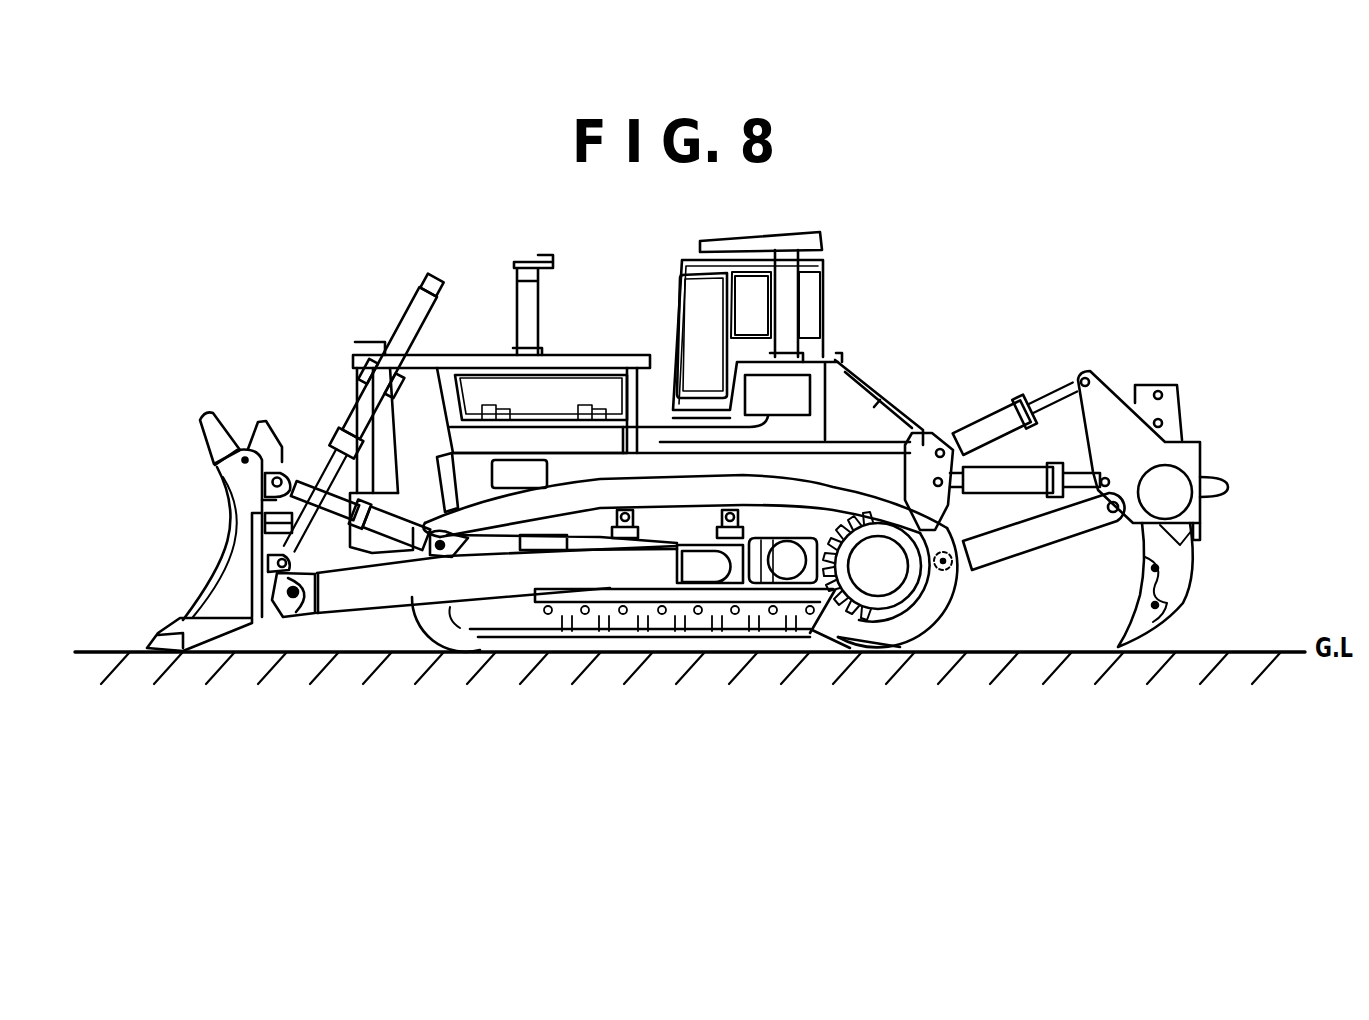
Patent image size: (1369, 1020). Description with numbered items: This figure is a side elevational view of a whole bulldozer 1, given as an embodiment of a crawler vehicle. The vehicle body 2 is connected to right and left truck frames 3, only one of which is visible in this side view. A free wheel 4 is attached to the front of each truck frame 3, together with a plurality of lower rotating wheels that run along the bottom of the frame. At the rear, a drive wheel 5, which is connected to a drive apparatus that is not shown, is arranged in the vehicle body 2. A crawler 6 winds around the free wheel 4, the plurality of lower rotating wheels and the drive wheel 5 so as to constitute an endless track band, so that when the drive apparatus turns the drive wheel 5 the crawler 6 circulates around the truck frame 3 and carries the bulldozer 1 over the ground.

The bulldozer 1 is at (848, 326).
The vehicle body 2 is at (603, 358).
The truck frame 3 is at (645, 596).
The free wheel 4 is at (453, 612).
The drive wheel 5 is at (887, 600).
The crawler 6 is at (688, 646).